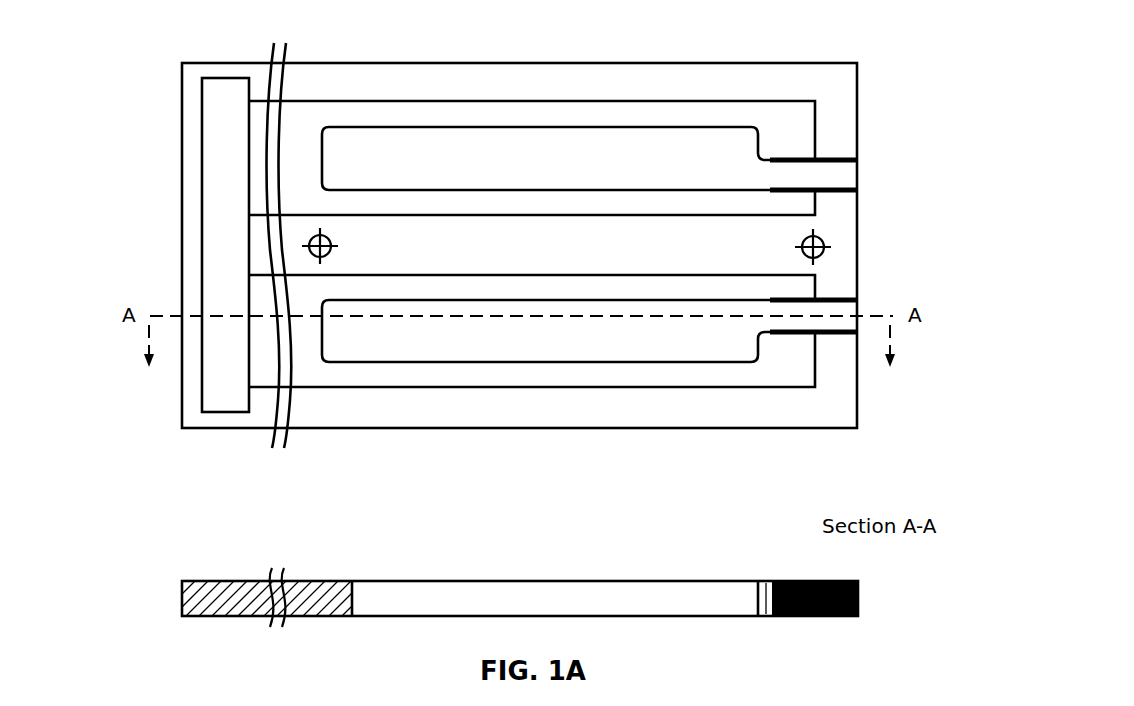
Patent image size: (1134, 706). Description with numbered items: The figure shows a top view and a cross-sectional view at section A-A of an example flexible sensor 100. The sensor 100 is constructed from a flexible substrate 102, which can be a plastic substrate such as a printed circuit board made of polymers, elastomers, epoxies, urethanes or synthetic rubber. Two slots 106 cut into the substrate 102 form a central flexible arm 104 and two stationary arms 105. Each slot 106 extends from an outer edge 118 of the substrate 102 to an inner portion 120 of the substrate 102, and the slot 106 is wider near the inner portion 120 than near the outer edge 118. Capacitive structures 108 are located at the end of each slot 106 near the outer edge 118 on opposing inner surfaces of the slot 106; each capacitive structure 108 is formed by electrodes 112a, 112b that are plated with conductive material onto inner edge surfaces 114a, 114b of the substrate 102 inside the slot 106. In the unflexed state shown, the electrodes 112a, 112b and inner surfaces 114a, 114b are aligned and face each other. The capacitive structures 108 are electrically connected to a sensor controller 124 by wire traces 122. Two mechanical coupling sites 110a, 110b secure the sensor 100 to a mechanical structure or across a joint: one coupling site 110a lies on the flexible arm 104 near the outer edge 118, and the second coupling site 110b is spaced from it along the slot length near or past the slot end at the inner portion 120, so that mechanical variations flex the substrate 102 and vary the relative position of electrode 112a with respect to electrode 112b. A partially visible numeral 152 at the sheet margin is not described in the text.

The flexible sensor 100 is at (128, 55).
The flexible substrate 102 is at (372, 62).
The flexible arm 104 is at (633, 255).
The stationary arms 105 is at (848, 80).
The slots 106 is at (503, 169).
The capacitive structures 108 is at (754, 175).
The mechanical coupling site 110a is at (801, 247).
The mechanical coupling site 110b is at (333, 242).
The electrode 112a is at (837, 160).
The electrode 112b is at (838, 195).
The inner edge surface 114a is at (853, 165).
The inner edge surface 114b is at (826, 179).
The outer edge 118 is at (858, 125).
The inner portion 120 is at (305, 118).
The wire traces 122 is at (453, 100).
The sensor controller 124 is at (203, 217).
The element of next figure 152 is at (879, 703).